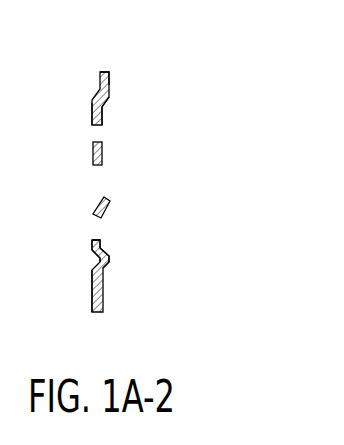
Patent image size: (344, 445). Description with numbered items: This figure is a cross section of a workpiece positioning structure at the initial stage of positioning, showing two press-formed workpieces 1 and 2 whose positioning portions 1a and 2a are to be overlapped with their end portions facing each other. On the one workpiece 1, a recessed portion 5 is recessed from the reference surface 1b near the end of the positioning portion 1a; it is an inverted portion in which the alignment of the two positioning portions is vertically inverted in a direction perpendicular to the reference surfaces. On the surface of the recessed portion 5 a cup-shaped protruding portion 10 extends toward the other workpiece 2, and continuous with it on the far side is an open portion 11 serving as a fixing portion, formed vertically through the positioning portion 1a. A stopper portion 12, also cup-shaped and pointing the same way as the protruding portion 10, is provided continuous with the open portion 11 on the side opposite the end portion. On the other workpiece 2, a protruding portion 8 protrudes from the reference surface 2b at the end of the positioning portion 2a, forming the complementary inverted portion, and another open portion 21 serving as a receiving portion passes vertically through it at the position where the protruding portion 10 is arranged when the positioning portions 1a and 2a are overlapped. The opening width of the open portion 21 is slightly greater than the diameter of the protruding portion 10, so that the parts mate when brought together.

The workpiece 1 is at (120, 302).
The positioning portion 1a is at (109, 265).
The reference surface 1b is at (92, 287).
The workpiece 2 is at (122, 66).
The positioning portion 2a is at (103, 114).
The reference surface 2b is at (99, 78).
The recessed portion 5 is at (99, 258).
The protruding portion 8 is at (91, 110).
The protruding portion 10 is at (93, 215).
The open portion 11 is at (101, 243).
The stopper portion 12 is at (92, 243).
The open portion 21 is at (101, 143).